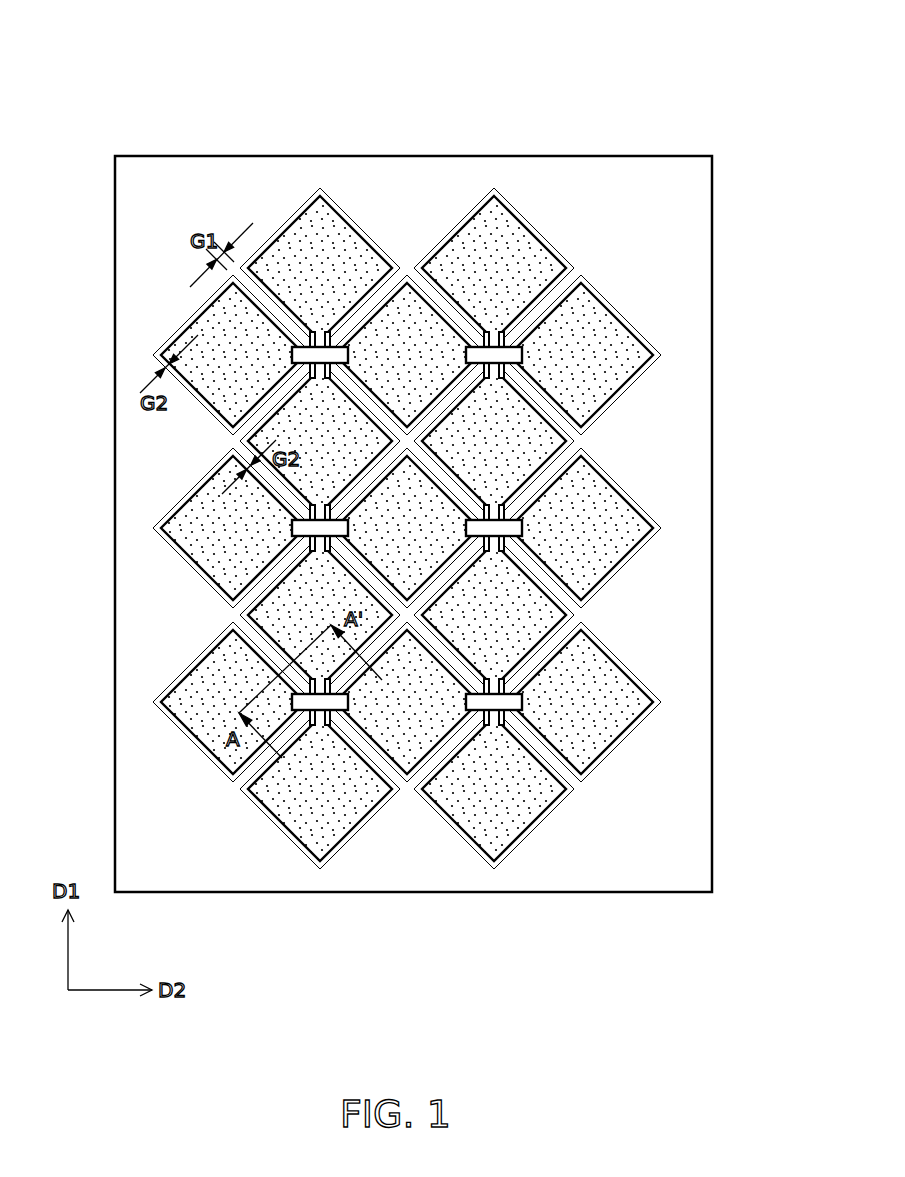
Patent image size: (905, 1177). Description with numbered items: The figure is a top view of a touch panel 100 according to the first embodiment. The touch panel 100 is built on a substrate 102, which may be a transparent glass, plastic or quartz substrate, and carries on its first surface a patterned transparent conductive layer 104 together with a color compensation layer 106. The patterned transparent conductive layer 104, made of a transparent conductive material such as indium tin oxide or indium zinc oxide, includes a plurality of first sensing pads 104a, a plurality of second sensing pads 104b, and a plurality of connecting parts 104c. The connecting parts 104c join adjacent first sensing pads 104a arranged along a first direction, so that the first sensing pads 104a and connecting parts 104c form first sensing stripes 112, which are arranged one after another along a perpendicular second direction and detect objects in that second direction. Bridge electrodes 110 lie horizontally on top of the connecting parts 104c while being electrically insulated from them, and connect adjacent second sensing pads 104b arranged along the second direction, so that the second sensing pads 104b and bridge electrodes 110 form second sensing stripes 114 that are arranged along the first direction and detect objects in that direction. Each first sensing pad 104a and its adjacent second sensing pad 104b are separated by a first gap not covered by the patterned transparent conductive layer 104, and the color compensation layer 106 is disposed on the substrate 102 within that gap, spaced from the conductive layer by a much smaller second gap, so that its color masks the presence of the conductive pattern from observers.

The touch panel 100 is at (648, 58).
The substrate 102 is at (283, 227).
The patterned transparent conductive layer 104 is at (518, 121).
The first sensing pads 104a is at (337, 228).
The second sensing pads 104b is at (413, 266).
The connecting parts 104c is at (320, 338).
The color compensation layer 106 is at (693, 279).
The bridge electrodes 110 is at (297, 345).
The first sensing stripe 112 is at (288, 217).
The second sensing stripe 114 is at (197, 487).